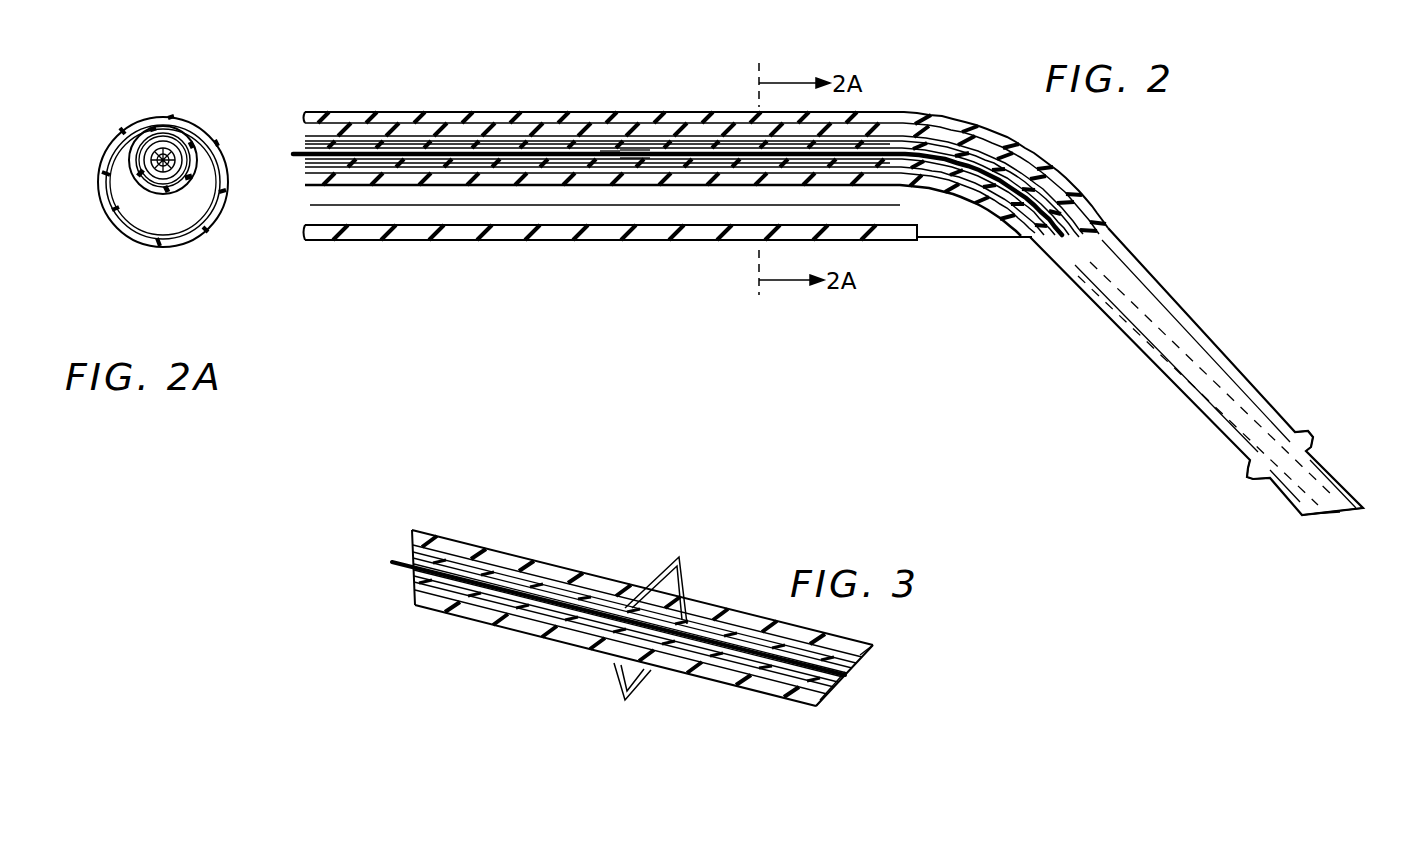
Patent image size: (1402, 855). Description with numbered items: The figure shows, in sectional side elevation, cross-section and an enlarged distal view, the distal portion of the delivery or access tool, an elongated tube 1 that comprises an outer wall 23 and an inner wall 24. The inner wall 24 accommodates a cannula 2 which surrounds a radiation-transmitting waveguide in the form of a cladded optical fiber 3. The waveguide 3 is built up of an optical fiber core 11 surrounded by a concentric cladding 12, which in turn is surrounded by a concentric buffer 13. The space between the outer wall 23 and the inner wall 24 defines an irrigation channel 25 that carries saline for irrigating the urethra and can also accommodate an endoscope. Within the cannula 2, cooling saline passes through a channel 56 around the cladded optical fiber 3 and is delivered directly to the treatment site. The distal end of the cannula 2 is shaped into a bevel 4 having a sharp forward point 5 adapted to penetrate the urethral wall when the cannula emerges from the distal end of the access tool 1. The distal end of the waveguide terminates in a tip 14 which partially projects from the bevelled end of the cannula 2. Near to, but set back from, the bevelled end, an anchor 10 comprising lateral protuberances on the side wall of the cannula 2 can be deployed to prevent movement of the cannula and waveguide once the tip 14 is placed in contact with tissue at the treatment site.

In FIG. 2, the elongated tube 1 is at (517, 112).
In FIG. 2A, the elongated tube 1 is at (150, 118).
In FIG. 2, the cannula 2 is at (992, 160).
In FIG. 2A, the cannula 2 is at (172, 128).
In FIG. 3, the cannula 2 is at (580, 572).
In FIG. 2, the cladded optical fiber 3 is at (642, 158).
In FIG. 2A, the cladded optical fiber 3 is at (195, 131).
In FIG. 3, the cladded optical fiber 3 is at (455, 592).
In FIG. 2, the bevel 4 is at (1335, 516).
In FIG. 3, the bevel 4 is at (845, 672).
In FIG. 2, the sharp forward point 5 is at (1365, 508).
In FIG. 3, the sharp forward point 5 is at (872, 652).
In FIG. 2, the anchor 10 is at (1310, 432).
In FIG. 3, the anchor 10 is at (683, 580).
In FIG. 2, the optical fiber core 11 is at (294, 164).
In FIG. 3, the optical fiber core 11 is at (402, 566).
In FIG. 2, the cladding 12 is at (630, 152).
In FIG. 3, the cladding 12 is at (490, 600).
In FIG. 2, the buffer 13 is at (663, 94).
In FIG. 3, the buffer 13 is at (580, 628).
In FIG. 3, the tip 14 is at (830, 688).
In FIG. 2, the outer wall 23 is at (388, 112).
In FIG. 2A, the outer wall 23 is at (136, 238).
In FIG. 2, the inner wall 24 is at (423, 112).
In FIG. 2A, the inner wall 24 is at (183, 192).
In FIG. 2, the irrigation channel 25 is at (683, 212).
In FIG. 2A, the irrigation channel 25 is at (124, 158).
In FIG. 2, the channel 56 is at (608, 142).
In FIG. 2A, the channel 56 is at (160, 152).